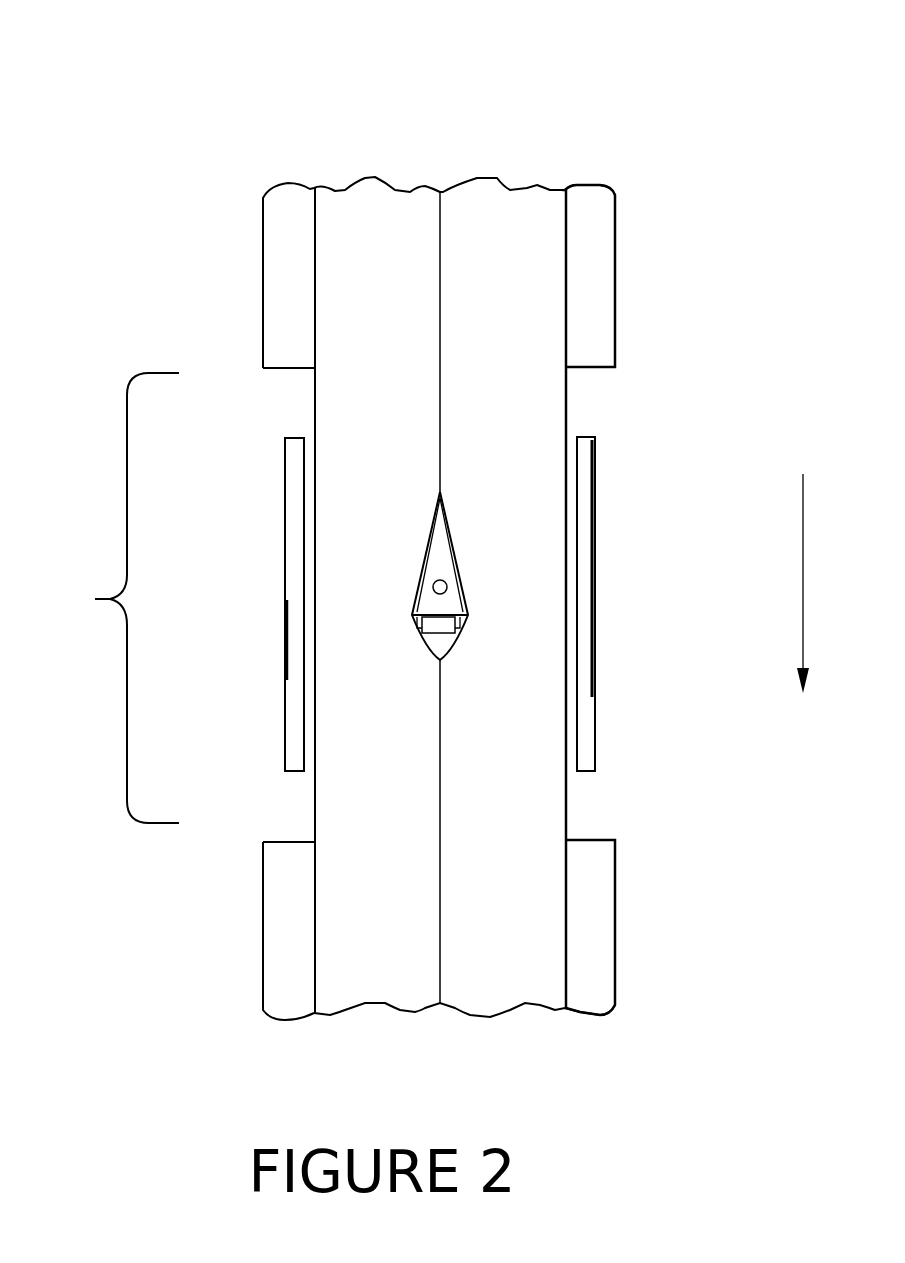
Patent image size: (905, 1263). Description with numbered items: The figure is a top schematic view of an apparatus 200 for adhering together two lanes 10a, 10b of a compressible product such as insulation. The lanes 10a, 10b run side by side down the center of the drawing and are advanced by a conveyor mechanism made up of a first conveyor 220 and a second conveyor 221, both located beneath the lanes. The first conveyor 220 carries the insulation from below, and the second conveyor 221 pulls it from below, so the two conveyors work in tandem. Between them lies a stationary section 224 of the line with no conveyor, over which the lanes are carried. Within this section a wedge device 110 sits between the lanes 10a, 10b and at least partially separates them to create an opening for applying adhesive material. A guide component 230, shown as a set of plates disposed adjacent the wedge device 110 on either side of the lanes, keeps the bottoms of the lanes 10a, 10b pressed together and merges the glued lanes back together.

The apparatus 200 is at (86, 42).
The lane of compressible product 10a is at (406, 263).
The lane of compressible product 10b is at (532, 263).
The wedge device 110 is at (470, 595).
The first conveyor 220 is at (616, 285).
The second conveyor 221 is at (616, 889).
The stationary section 224 is at (95, 599).
The guide component 230 is at (284, 711).